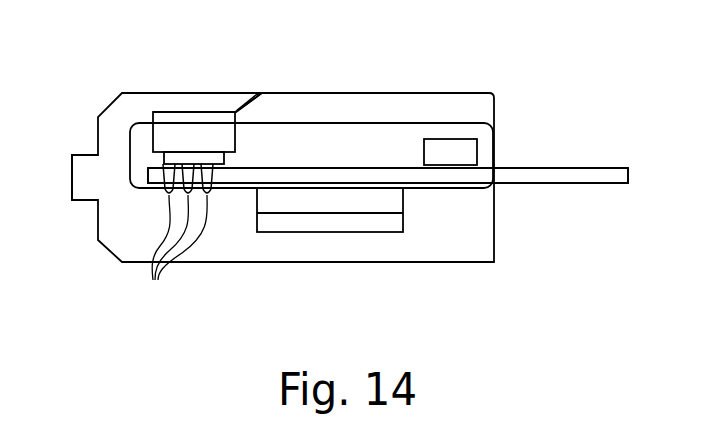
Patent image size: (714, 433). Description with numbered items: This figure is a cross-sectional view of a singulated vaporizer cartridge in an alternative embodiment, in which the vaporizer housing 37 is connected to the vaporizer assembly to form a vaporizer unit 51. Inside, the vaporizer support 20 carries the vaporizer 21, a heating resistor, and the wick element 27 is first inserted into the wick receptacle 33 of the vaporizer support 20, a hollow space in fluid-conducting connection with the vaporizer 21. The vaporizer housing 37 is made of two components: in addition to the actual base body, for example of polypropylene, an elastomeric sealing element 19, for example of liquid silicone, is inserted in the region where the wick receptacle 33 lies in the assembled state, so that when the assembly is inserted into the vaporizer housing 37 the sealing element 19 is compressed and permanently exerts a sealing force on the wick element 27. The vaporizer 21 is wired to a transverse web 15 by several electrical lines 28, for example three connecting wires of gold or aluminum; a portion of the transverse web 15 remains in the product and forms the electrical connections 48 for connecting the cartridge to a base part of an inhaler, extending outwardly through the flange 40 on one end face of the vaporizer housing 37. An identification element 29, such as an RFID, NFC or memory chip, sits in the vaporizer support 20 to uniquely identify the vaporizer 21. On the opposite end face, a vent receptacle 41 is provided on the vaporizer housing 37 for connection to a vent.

The transverse web 15 is at (555, 186).
The electrical connections 48 is at (388, 175).
The sealing element 19 is at (197, 103).
The vaporizer support 20 is at (357, 123).
The vaporizer 21 is at (152, 160).
The wick element 27 is at (173, 120).
The electrical lines 28 is at (176, 237).
The identification element 29 is at (452, 140).
The wick receptacle 33 is at (240, 141).
The vaporizer housing 37 is at (317, 263).
The flange 40 is at (495, 117).
The vent receptacle 41 is at (87, 203).
The vaporizer unit 51 is at (288, 270).